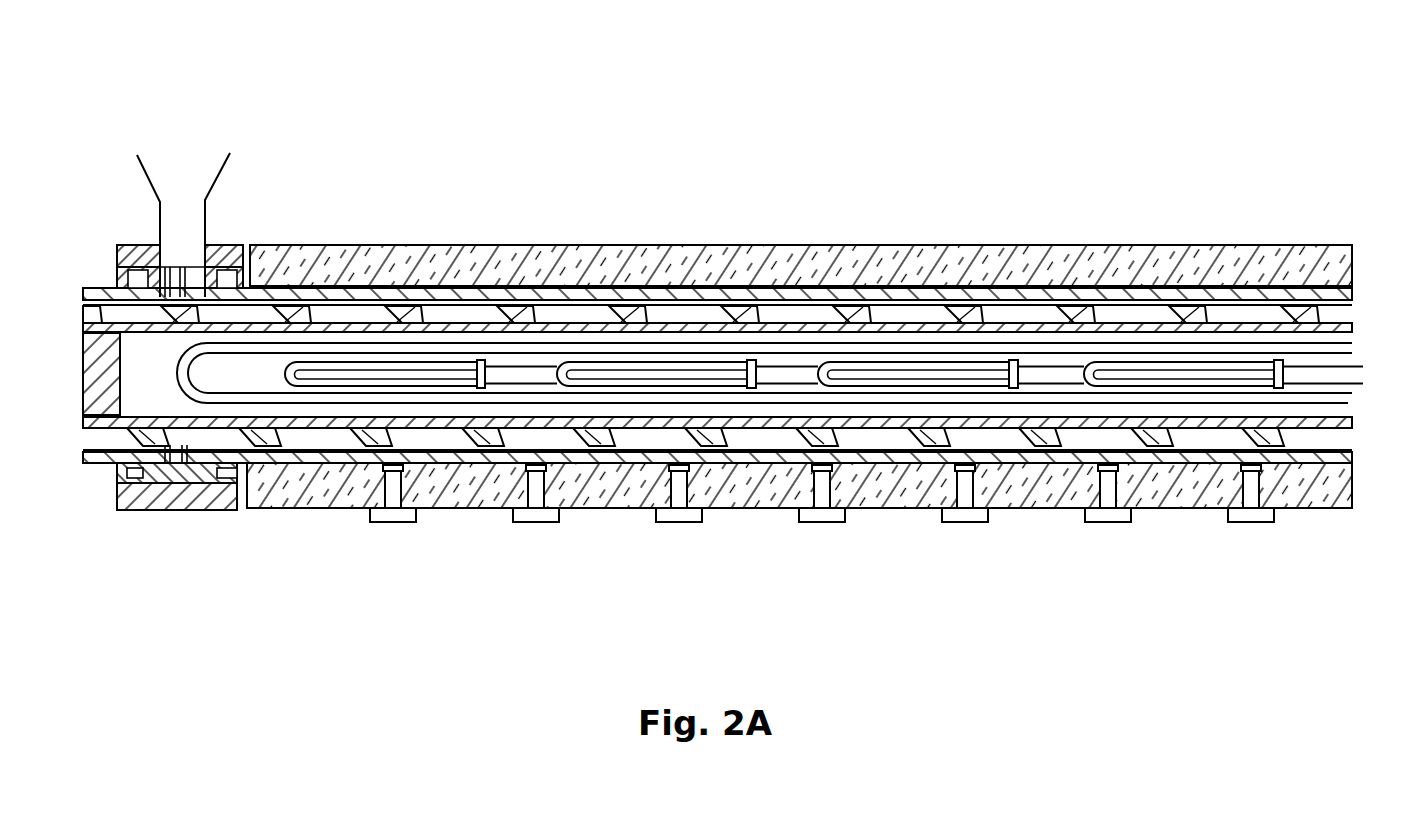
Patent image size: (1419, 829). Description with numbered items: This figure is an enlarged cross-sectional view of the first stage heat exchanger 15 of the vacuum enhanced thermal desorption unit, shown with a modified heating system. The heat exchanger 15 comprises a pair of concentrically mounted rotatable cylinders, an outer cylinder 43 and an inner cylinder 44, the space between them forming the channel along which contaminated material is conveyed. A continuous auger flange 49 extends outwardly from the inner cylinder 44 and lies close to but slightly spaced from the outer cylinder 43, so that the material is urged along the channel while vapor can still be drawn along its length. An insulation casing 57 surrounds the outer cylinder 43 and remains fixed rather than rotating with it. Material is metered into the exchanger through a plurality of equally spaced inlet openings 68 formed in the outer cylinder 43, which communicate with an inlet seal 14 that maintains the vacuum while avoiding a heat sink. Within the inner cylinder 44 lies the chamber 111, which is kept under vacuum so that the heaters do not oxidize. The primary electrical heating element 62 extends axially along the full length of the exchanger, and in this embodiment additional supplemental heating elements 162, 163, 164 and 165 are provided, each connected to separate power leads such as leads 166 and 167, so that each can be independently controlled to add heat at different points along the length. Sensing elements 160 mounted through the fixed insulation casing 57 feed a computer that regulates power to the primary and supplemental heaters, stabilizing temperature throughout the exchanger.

The inlet seal 14 is at (242, 235).
The first stage heat exchanger 15 is at (298, 530).
The outer cylinder 43 is at (490, 467).
The inner cylinder 44 is at (665, 430).
The auger flange 49 is at (945, 430).
The insulation casing 57 is at (1053, 246).
The electrical heating element 62 is at (760, 347).
The inlet openings 68 is at (180, 273).
The chamber 111 is at (145, 370).
The sensing elements 160 is at (385, 523).
The supplemental heating element 162 is at (388, 362).
The supplemental heating element 163 is at (612, 357).
The supplemental heating element 164 is at (878, 362).
The supplemental heating element 165 is at (1140, 360).
The power lead 166 is at (1350, 368).
The power lead 167 is at (1350, 390).